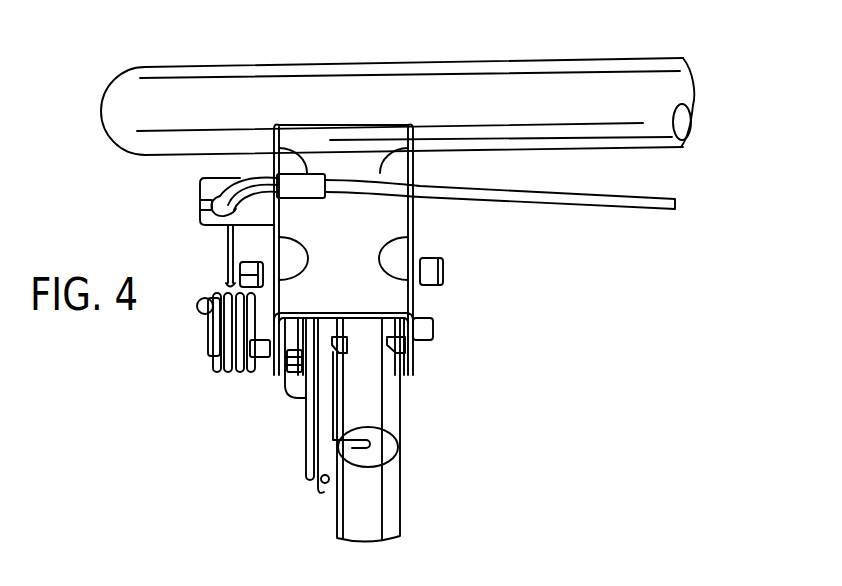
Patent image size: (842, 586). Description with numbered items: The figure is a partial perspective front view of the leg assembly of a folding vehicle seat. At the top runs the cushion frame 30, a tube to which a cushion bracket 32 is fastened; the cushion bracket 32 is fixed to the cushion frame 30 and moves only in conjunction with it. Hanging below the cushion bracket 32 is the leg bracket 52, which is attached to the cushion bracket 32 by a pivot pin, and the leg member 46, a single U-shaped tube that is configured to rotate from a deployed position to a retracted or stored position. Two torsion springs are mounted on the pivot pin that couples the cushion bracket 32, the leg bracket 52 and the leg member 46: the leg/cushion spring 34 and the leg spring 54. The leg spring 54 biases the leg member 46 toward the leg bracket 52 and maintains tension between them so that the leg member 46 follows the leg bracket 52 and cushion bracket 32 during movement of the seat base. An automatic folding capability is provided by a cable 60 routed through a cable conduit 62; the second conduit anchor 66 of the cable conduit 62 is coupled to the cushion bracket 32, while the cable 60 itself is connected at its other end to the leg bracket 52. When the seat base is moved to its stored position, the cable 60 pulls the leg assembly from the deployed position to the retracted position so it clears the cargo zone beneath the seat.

The cushion frame 30 is at (425, 86).
The cushion bracket 32 is at (387, 214).
The leg/cushion spring 34 is at (227, 373).
The leg member 46 is at (383, 508).
The leg bracket 52 is at (313, 489).
The leg spring 54 is at (325, 396).
The cable 60 is at (228, 252).
The cable conduit 62 is at (578, 202).
The second conduit anchor 66 is at (207, 202).